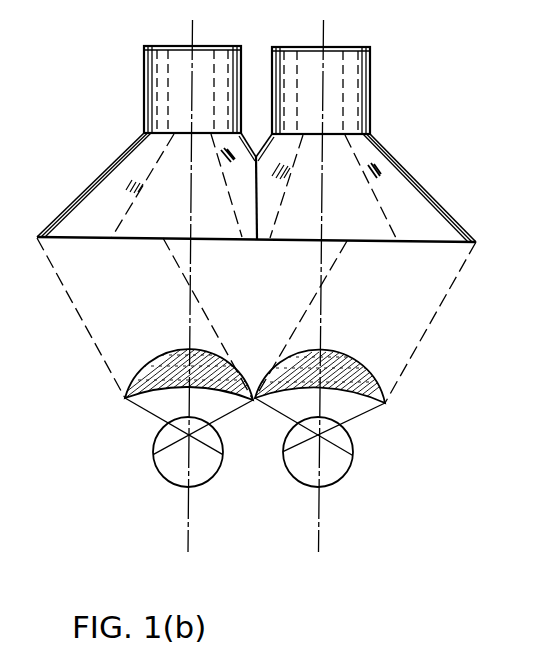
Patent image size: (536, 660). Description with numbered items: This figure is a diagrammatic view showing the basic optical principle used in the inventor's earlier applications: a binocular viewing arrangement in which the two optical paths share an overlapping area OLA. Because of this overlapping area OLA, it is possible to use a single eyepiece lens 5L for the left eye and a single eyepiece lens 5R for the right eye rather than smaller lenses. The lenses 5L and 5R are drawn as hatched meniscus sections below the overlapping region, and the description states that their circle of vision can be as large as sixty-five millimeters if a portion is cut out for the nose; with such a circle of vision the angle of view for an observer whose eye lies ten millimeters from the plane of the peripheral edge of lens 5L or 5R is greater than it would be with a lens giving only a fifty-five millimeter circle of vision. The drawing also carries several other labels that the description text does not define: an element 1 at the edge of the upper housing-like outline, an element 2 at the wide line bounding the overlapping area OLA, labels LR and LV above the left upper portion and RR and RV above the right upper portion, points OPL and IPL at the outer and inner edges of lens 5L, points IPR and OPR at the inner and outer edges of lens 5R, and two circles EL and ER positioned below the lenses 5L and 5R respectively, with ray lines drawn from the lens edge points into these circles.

The housing hood 1 is at (396, 163).
The base plate 2 is at (109, 239).
The overlapping area OLA is at (287, 241).
The left reticle LR is at (193, 38).
The left viewing axis LV is at (194, 30).
The right reticle RR is at (325, 42).
The right viewing axis RV is at (325, 31).
The single eyepiece lens 5L is at (143, 367).
The single eyepiece lens 5R is at (368, 373).
The outer pupil point left OPL is at (157, 415).
The inner pupil point left IPL is at (223, 413).
The inner pupil point right IPR is at (280, 415).
The outer pupil point right OPR is at (357, 413).
The left eye EL is at (155, 466).
The right eye ER is at (353, 467).